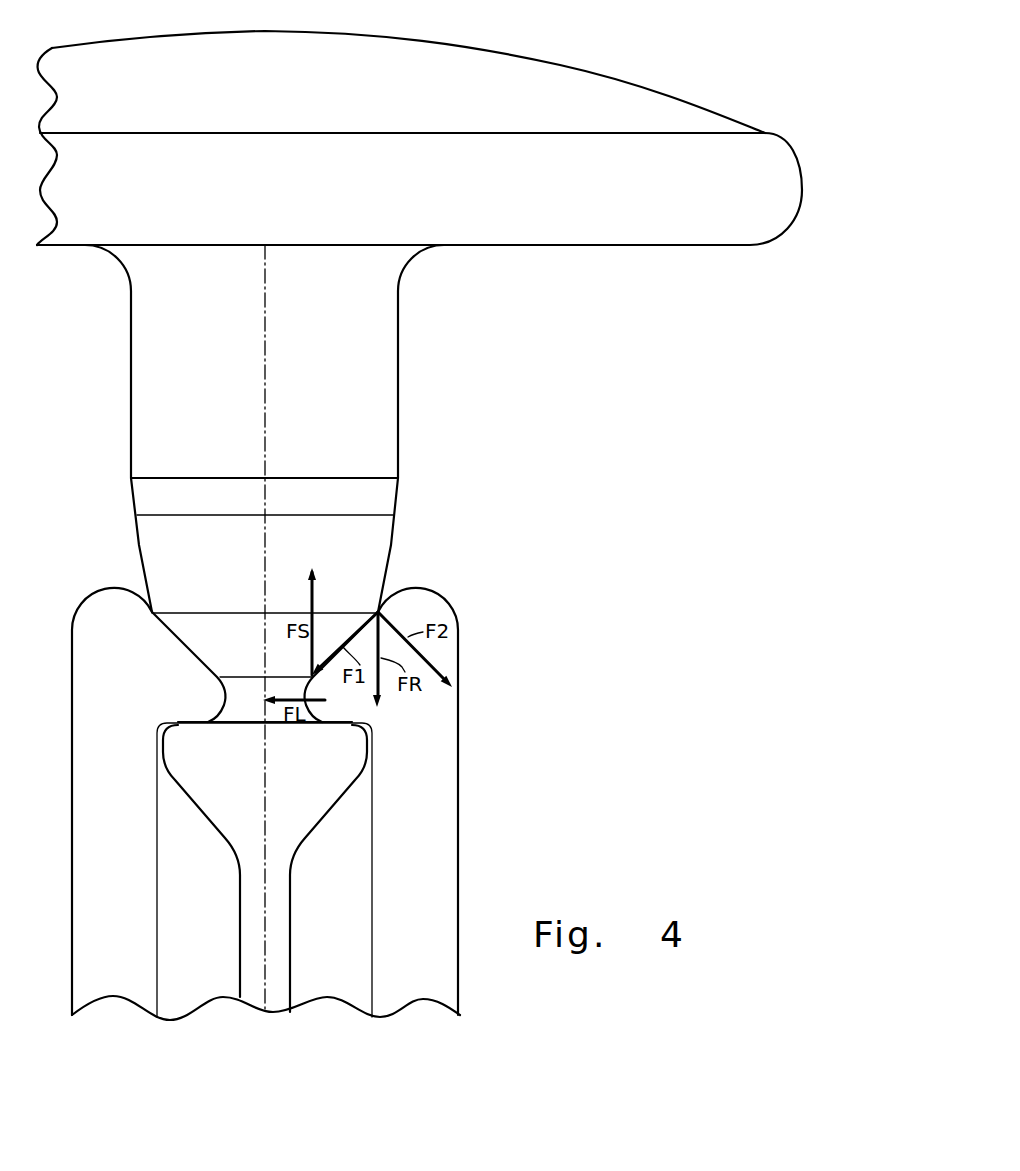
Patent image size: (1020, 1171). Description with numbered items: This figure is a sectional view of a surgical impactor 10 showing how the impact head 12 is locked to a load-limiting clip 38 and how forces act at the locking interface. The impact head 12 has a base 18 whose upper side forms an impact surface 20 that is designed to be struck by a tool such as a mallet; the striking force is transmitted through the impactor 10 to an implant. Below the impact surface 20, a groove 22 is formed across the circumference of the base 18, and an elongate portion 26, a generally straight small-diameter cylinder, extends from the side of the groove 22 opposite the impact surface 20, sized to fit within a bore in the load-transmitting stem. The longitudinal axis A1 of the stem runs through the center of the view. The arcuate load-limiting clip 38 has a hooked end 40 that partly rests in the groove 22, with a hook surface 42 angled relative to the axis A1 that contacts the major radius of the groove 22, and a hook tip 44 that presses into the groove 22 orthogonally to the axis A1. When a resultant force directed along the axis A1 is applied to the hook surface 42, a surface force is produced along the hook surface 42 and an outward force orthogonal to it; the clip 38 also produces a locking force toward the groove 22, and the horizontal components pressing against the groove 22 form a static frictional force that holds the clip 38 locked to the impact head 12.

The surgical impactor 10 is at (611, 451).
The impact head 12 is at (628, 247).
The base 18 is at (131, 388).
The impact surface 20 is at (612, 78).
The groove 22 is at (255, 701).
The elongate portion 26 is at (240, 953).
The load-limiting clip 38 is at (459, 782).
The hooked end 40 is at (445, 593).
The hook surface 42 is at (378, 612).
The hook tip 44 is at (312, 724).
The axis A1 is at (265, 411).